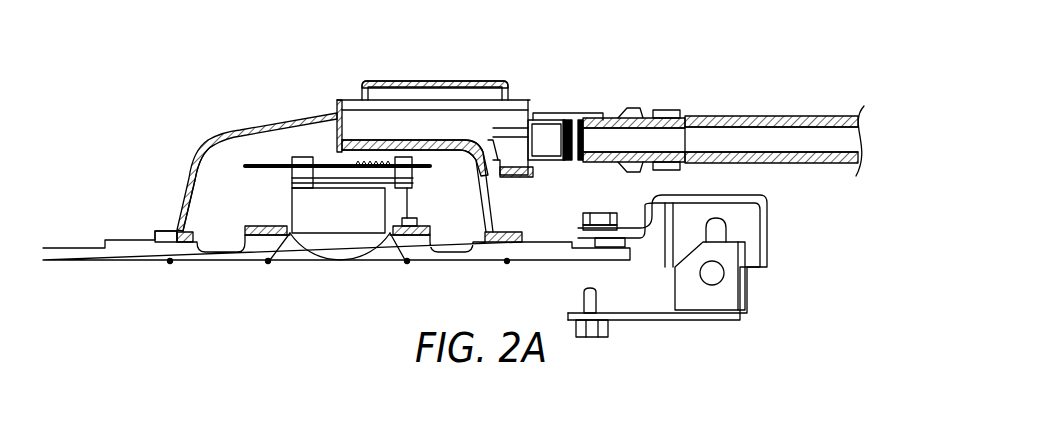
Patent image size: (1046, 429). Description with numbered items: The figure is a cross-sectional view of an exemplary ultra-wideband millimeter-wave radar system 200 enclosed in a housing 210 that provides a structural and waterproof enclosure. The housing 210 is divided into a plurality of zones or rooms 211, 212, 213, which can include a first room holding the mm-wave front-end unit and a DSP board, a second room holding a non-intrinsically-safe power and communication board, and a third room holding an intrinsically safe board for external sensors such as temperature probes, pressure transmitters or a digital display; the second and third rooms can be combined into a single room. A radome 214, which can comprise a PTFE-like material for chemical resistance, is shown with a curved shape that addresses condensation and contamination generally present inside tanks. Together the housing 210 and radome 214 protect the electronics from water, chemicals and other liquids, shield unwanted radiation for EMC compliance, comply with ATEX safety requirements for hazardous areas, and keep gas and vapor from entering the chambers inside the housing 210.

The UWB mm-wave radar system 200 is at (623, 75).
The housing 210 is at (253, 122).
The room 211 is at (225, 197).
The room 212 is at (340, 215).
The room 213 is at (415, 123).
The radome 214 is at (352, 248).